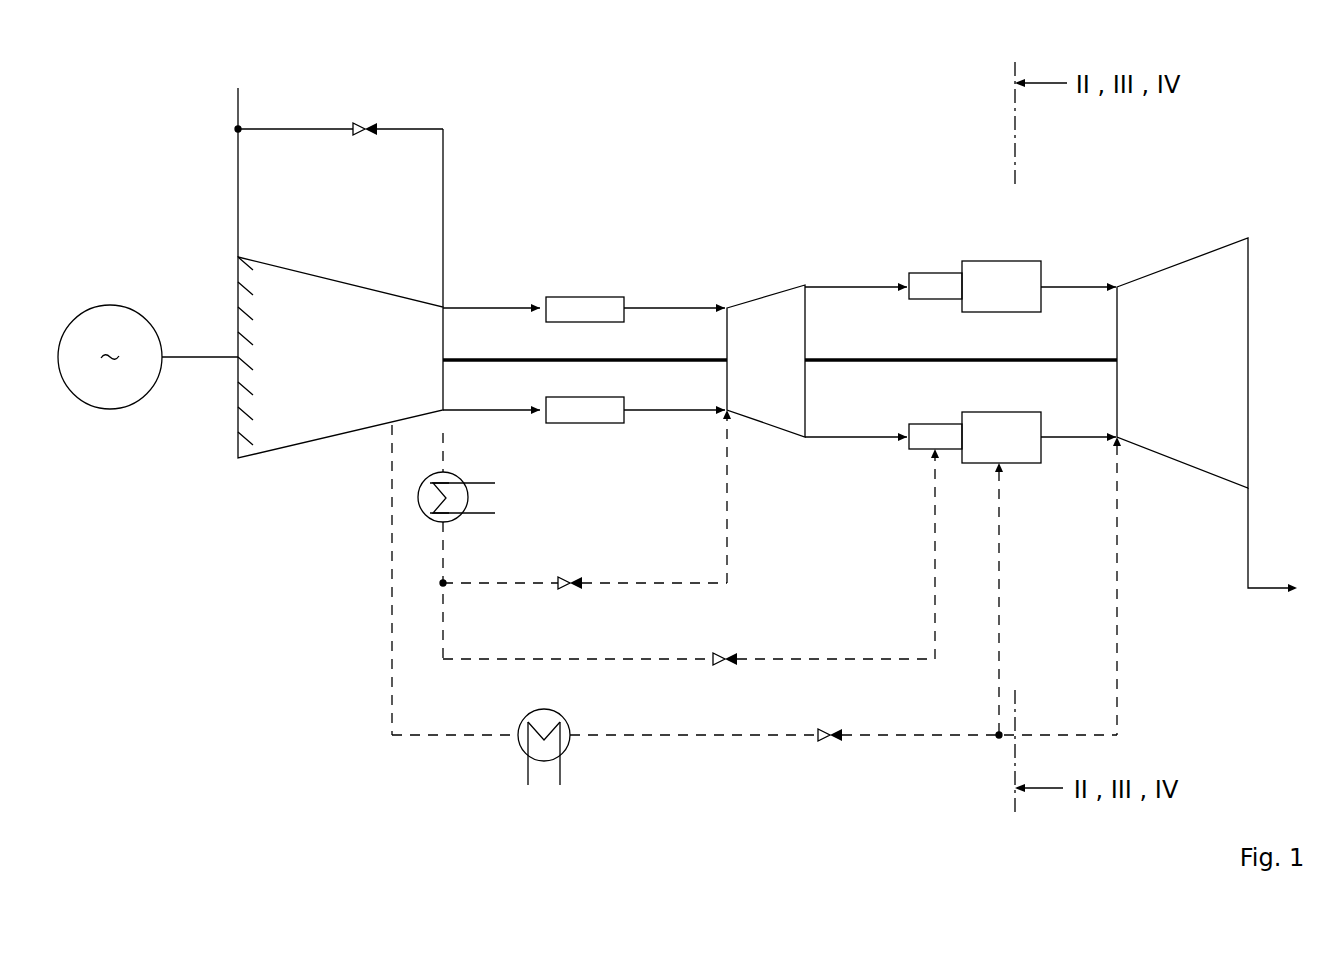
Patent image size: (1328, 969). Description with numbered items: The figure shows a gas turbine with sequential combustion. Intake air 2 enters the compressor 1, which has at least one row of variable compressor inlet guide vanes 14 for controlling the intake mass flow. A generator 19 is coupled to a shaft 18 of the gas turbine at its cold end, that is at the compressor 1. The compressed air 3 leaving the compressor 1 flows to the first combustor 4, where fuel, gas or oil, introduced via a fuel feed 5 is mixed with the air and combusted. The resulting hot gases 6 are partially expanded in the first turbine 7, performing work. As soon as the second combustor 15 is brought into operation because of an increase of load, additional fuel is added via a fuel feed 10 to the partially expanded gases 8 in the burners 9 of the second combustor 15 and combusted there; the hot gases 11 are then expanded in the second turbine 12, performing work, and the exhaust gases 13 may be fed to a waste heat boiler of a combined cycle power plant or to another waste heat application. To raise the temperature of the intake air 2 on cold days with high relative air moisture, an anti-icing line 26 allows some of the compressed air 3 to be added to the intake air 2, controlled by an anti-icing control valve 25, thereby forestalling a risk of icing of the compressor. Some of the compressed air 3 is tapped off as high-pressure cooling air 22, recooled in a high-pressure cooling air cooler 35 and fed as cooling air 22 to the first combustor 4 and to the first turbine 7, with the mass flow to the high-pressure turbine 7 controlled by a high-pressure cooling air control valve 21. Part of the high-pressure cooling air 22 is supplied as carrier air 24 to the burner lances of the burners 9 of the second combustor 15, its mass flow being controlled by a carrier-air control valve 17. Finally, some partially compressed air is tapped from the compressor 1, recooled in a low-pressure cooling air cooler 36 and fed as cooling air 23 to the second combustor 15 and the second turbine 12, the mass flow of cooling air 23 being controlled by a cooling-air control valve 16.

The compressor 1 is at (349, 370).
The intake air 2 is at (237, 180).
The compressed air 3 is at (496, 412).
The first combustor 4 is at (566, 305).
The fuel feed 5 is at (585, 295).
The hot gases 6 is at (667, 412).
The first turbine 7 is at (777, 376).
The partially expanded gases 8 is at (863, 440).
The burners 9 is at (925, 282).
The fuel feed 10 is at (935, 271).
The hot gases 11 is at (1073, 440).
The second turbine 12 is at (1168, 376).
The exhaust gases 13 is at (1288, 545).
The variable compressor inlet guide vanes 14 is at (250, 307).
The second combustor 15 is at (1022, 276).
The cooling-air control valve 16 is at (831, 738).
The carrier-air control valve 17 is at (727, 662).
The shaft 18 is at (190, 353).
The generator 19 is at (120, 409).
The high-pressure cooling air control valve 21 is at (571, 586).
The high-pressure cooling air 22 is at (442, 553).
The cooling air 23 is at (1002, 628).
The carrier air 24 is at (897, 662).
The anti-icing control valve 25 is at (367, 125).
The anti-icing line 26 is at (300, 127).
The high-pressure cooling air cooler 35 is at (422, 512).
The low-pressure cooling air cooler 36 is at (523, 752).